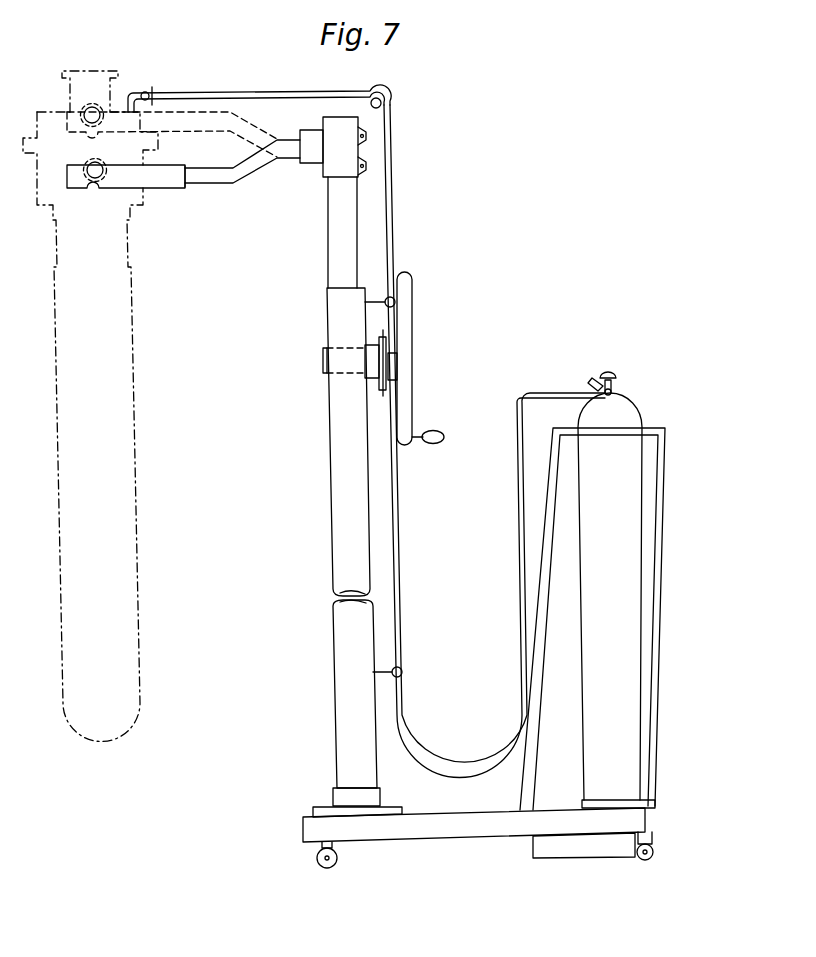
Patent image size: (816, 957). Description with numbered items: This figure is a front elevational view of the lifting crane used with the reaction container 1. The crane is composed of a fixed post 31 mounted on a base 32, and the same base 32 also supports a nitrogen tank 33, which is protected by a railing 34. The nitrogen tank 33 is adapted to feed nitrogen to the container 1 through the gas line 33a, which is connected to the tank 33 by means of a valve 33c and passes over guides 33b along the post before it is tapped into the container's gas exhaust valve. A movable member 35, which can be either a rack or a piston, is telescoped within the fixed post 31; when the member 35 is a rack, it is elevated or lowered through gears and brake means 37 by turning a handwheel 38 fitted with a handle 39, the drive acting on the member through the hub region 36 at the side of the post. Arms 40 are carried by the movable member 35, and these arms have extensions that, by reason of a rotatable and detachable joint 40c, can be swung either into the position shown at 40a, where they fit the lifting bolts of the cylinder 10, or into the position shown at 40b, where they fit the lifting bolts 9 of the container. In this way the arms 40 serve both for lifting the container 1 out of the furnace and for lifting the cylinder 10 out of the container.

The reaction container 1 is at (128, 508).
The lifting bolts 9 is at (101, 166).
The cylinder 10 is at (102, 99).
The fixed post 31 is at (367, 538).
The base 32 is at (438, 823).
The nitrogen tank 33 is at (655, 586).
The gas line 33a is at (398, 626).
The guides 33b is at (381, 104).
The valve 33c is at (592, 378).
The railing 34 is at (657, 505).
The movable member 35 is at (352, 216).
The hub 36 is at (367, 352).
The gears and brake means 37 is at (386, 380).
The handwheel 38 is at (405, 279).
The handle 39 is at (436, 432).
The arms 40 is at (212, 176).
The arm position 40a is at (203, 108).
The arm position 40b is at (158, 182).
The rotatable and detachable joint 40c is at (185, 185).